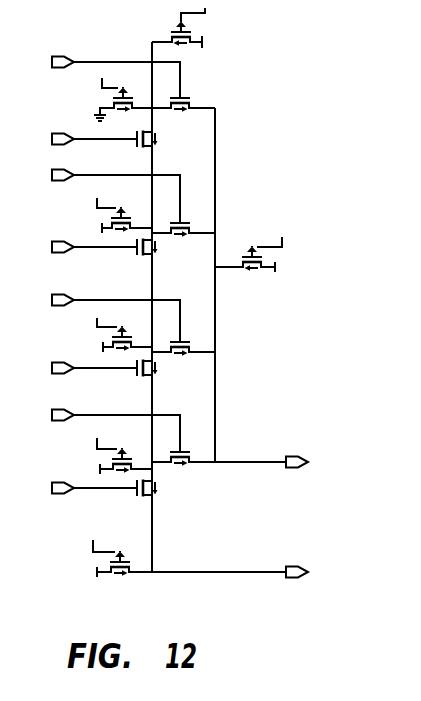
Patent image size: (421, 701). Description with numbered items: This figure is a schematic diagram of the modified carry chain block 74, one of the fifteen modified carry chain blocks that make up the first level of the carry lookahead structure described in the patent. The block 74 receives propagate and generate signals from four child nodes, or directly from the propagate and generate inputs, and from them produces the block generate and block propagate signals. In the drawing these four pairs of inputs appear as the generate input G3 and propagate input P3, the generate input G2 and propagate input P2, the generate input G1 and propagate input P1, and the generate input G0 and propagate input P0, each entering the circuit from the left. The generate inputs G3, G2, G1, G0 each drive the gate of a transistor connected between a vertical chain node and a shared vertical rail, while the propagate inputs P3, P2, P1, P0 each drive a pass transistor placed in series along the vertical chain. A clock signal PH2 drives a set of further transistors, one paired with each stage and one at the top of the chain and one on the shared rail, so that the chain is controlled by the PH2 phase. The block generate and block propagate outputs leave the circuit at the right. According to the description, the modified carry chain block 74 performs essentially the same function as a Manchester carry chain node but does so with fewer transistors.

The modified carry chain block 74 is at (189, 293).
The phase 2 clock transistor PH2 is at (187, 288).
The generate input 3 G3 is at (102, 74).
The propagate input 3 P3 is at (91, 140).
The generate input 2 G2 is at (102, 193).
The propagate input 2 P2 is at (90, 248).
The generate input 1 G1 is at (104, 315).
The propagate input 1 P1 is at (92, 369).
The generate input 0 G0 is at (101, 428).
The propagate input 0 P0 is at (90, 489).